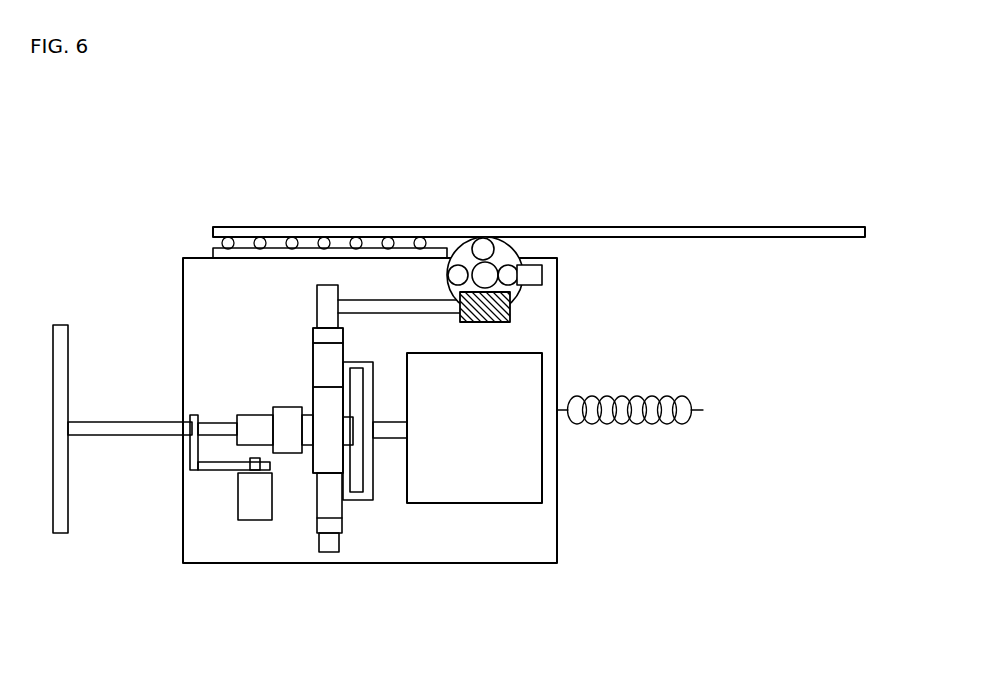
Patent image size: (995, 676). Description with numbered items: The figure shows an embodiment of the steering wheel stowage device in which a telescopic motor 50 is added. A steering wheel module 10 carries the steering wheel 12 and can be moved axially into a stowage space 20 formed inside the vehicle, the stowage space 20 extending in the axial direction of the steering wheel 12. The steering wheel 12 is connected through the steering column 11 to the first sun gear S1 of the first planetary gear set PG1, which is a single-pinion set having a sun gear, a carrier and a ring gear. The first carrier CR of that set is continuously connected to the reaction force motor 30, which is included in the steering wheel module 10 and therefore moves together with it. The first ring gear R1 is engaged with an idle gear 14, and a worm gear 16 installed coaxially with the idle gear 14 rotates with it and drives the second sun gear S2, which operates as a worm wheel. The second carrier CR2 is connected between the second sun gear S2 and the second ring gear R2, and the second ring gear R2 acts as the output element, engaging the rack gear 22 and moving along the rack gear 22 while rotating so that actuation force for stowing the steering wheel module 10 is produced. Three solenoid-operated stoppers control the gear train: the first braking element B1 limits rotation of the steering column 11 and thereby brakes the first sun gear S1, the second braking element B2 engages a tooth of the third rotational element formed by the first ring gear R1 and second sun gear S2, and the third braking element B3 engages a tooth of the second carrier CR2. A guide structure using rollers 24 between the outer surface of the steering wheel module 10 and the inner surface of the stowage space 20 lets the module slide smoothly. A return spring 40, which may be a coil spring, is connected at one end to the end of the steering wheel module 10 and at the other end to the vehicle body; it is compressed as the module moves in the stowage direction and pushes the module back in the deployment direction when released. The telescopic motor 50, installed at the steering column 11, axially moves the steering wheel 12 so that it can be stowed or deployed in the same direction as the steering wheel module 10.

The steering wheel module 10 is at (566, 373).
The steering column 11 is at (117, 432).
The steering wheel 12 is at (60, 528).
The idle gear 14 is at (330, 290).
The worm gear 16 is at (512, 308).
The stowage space 20 is at (817, 450).
The rack gear 22 is at (730, 230).
The rollers 24 is at (292, 240).
The reaction force motor 30 is at (542, 477).
The return spring 40 is at (678, 425).
The telescopic motor 50 is at (245, 513).
The first braking element B1 is at (283, 407).
The second braking element B2 is at (329, 545).
The third braking element B3 is at (538, 265).
The first ring gear R1 is at (323, 335).
The second ring gear R2 is at (512, 250).
The first sun gear S1 is at (325, 460).
The second sun gear S2 is at (478, 268).
The first carrier CR is at (322, 366).
The second carrier CR2 is at (483, 245).
The first planetary gear set PG1 is at (362, 531).